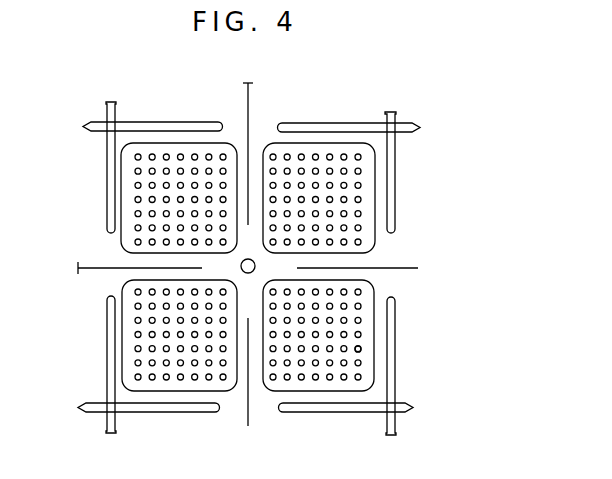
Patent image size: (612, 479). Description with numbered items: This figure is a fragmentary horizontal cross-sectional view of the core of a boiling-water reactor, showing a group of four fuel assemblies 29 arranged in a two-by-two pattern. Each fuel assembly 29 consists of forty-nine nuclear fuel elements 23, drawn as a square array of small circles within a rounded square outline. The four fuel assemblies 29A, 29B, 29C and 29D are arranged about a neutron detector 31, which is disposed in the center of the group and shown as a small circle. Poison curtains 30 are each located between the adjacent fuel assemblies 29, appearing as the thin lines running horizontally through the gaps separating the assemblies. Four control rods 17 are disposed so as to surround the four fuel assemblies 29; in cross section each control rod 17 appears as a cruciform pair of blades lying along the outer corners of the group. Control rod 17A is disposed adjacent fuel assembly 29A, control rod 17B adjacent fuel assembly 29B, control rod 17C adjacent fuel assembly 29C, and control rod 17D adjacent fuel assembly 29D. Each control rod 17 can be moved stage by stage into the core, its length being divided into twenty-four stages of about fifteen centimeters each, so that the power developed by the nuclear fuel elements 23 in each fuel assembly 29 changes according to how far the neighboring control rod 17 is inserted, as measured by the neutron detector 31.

The control rod 17 is at (254, 258).
The control rod 17A is at (165, 122).
The control rod 17B is at (395, 211).
The control rod 17C is at (397, 392).
The control rod 17D is at (157, 413).
The fuel assembly 29 is at (247, 263).
The fuel assembly 29A is at (213, 143).
The fuel assembly 29B is at (342, 143).
The fuel assembly 29C is at (350, 364).
The fuel assembly 29D is at (222, 391).
The nuclear fuel element 23 is at (361, 350).
The poison curtain 30 is at (402, 268).
The neutron detector 31 is at (250, 273).